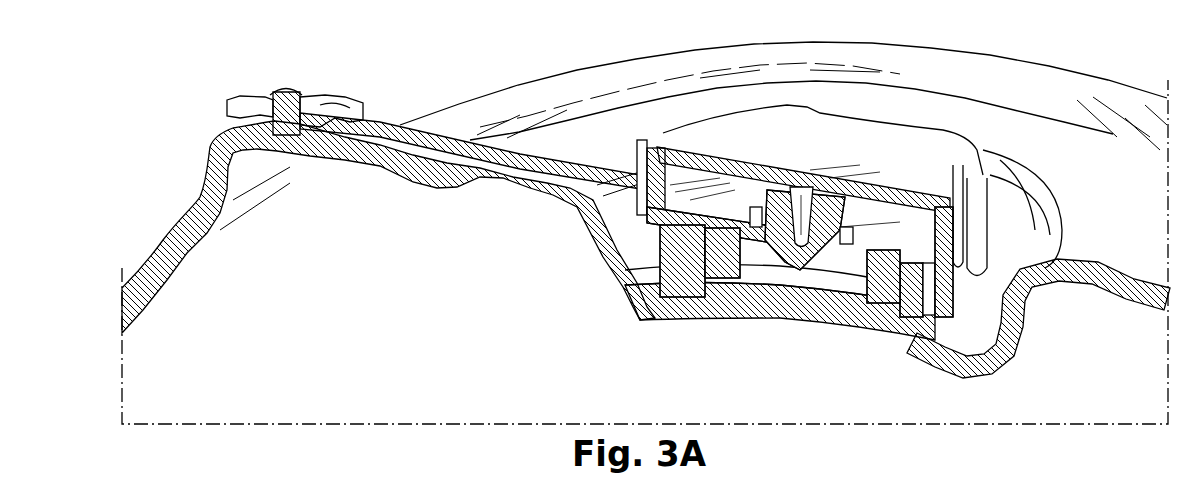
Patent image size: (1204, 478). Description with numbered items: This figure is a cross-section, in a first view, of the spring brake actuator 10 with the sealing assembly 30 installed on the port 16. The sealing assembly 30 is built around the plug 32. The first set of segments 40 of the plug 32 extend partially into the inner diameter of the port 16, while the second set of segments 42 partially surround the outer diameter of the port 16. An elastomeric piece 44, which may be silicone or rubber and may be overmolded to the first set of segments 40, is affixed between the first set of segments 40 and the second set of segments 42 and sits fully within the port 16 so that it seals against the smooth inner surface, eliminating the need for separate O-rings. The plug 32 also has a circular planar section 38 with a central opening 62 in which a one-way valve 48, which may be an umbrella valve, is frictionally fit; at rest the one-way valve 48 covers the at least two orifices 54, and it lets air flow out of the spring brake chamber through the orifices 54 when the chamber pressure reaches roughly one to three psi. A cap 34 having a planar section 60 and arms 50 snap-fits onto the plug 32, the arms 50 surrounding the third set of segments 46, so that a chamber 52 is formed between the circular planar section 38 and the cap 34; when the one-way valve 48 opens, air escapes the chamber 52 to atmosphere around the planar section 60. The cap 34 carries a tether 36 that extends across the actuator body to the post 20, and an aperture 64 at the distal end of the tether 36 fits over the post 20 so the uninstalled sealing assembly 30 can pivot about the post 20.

The spring brake actuator 10 is at (447, 84).
The port 16 is at (663, 313).
The post 20 is at (283, 86).
The sealing assembly 30 is at (990, 105).
The plug 32 is at (985, 301).
The cap 34 is at (983, 165).
The tether 36 is at (588, 162).
The circular planar section 38 is at (947, 287).
The first set of segments 40 is at (740, 280).
The second set of segments 42 is at (960, 335).
The elastomeric piece 44 is at (700, 313).
The third set of segments 46 is at (920, 220).
The one-way valve 48 is at (800, 250).
The arms 50 is at (983, 237).
The chamber 52 is at (923, 218).
The orifices 54 is at (758, 228).
The planar section 60 is at (943, 177).
The central opening 62 is at (827, 240).
The aperture 64 is at (312, 97).